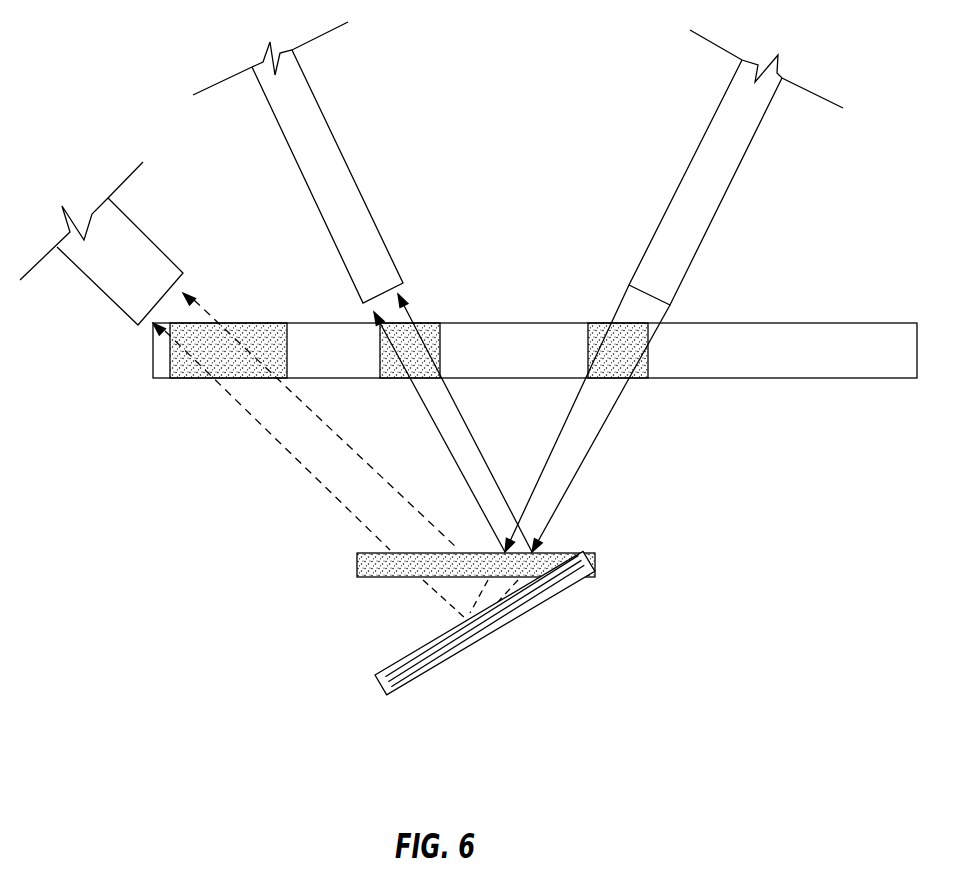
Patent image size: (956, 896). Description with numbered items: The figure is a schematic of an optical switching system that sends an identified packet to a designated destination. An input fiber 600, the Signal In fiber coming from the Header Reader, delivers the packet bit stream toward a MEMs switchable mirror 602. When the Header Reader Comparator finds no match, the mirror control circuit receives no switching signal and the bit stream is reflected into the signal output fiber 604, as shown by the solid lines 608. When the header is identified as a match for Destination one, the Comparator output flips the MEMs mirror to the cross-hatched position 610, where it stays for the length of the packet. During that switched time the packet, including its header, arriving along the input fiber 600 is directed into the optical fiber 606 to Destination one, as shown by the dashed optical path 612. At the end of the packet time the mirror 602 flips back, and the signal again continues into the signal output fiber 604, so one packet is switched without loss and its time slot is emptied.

The input fiber 600 is at (708, 128).
The MEMs switchable mirror 602 is at (363, 578).
The signal output fiber 604 is at (343, 153).
The optical fiber to Destination 1 606 is at (143, 230).
The solid lines 608 is at (423, 405).
The flipped mirror position 610 is at (408, 673).
The dashed optical path 612 is at (300, 408).